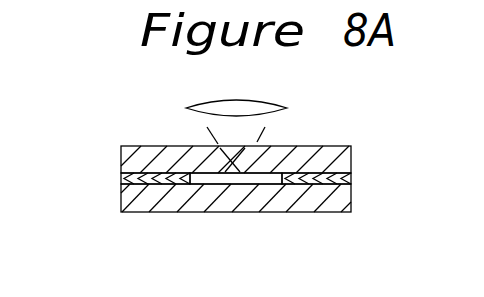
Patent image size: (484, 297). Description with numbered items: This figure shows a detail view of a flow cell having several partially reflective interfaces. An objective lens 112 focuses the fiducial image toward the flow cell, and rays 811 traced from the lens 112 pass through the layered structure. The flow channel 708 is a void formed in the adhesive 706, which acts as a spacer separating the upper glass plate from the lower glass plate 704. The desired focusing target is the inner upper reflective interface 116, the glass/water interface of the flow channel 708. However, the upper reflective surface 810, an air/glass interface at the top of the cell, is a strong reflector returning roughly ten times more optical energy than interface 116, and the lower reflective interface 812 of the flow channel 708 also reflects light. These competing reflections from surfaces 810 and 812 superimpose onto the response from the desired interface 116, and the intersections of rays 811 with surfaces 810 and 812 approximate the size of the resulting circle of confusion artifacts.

The objective lens 112 is at (288, 106).
The rays 811 is at (203, 132).
The upper reflective surface 810 is at (250, 173).
The inner upper reflective interface 116 is at (272, 146).
The adhesive 706 is at (121, 176).
The flow channel 708 is at (205, 179).
The lower glass plate 704 is at (353, 214).
The lower reflective interface 812 is at (262, 185).